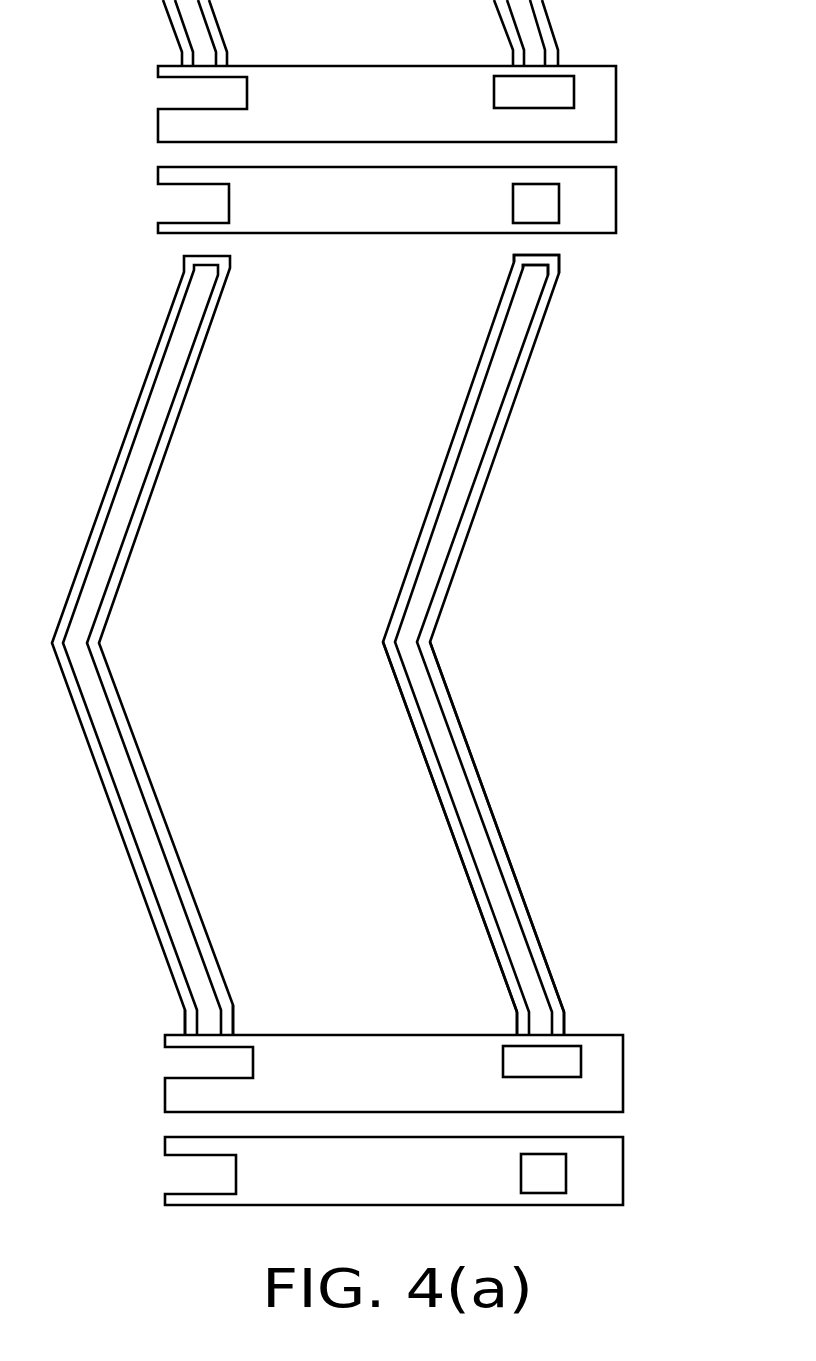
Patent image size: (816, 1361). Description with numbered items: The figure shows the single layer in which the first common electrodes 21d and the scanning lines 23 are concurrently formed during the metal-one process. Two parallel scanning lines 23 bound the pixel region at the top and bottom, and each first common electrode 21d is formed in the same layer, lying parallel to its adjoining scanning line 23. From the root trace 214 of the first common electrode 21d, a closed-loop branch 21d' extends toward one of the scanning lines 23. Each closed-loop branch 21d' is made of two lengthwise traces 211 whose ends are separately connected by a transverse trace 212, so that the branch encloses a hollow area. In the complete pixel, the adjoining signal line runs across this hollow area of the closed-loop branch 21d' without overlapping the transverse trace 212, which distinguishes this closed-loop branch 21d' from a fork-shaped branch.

The first common electrode 21d is at (444, 589).
The scanning line 23 is at (602, 190).
The transverse trace 212 is at (540, 257).
The closed-loop branch 21d' is at (379, 642).
The lengthwise trace 211 is at (459, 833).
The root trace 214 is at (181, 1041).